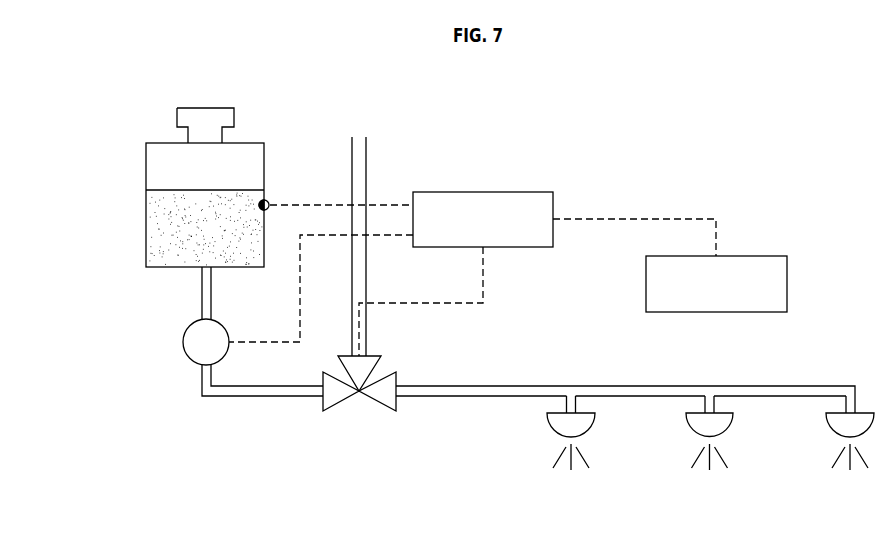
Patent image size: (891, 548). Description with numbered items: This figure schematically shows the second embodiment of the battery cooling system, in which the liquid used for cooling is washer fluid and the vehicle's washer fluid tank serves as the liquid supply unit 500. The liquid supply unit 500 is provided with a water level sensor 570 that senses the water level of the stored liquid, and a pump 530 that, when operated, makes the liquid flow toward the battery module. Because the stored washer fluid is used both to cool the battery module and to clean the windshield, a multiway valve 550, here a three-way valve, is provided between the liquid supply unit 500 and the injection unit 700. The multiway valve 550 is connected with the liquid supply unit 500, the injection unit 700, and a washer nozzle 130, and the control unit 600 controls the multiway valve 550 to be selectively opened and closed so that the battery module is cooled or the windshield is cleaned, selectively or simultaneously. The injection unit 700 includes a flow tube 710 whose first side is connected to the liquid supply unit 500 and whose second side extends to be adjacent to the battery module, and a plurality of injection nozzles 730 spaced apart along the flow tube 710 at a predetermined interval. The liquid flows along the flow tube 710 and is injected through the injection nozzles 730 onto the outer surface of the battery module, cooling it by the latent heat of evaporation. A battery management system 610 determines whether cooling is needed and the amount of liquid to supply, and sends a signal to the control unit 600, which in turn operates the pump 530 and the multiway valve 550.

The washer nozzle 130 is at (360, 156).
The liquid supply unit 500 is at (158, 171).
The pump 530 is at (183, 342).
The multiway valve 550 is at (343, 395).
The water level sensor 570 is at (268, 200).
The control unit 600 is at (483, 192).
The battery management system 610 is at (760, 256).
The injection unit 700 is at (683, 508).
The flow tube 710 is at (645, 396).
The injection nozzles 730 is at (695, 423).